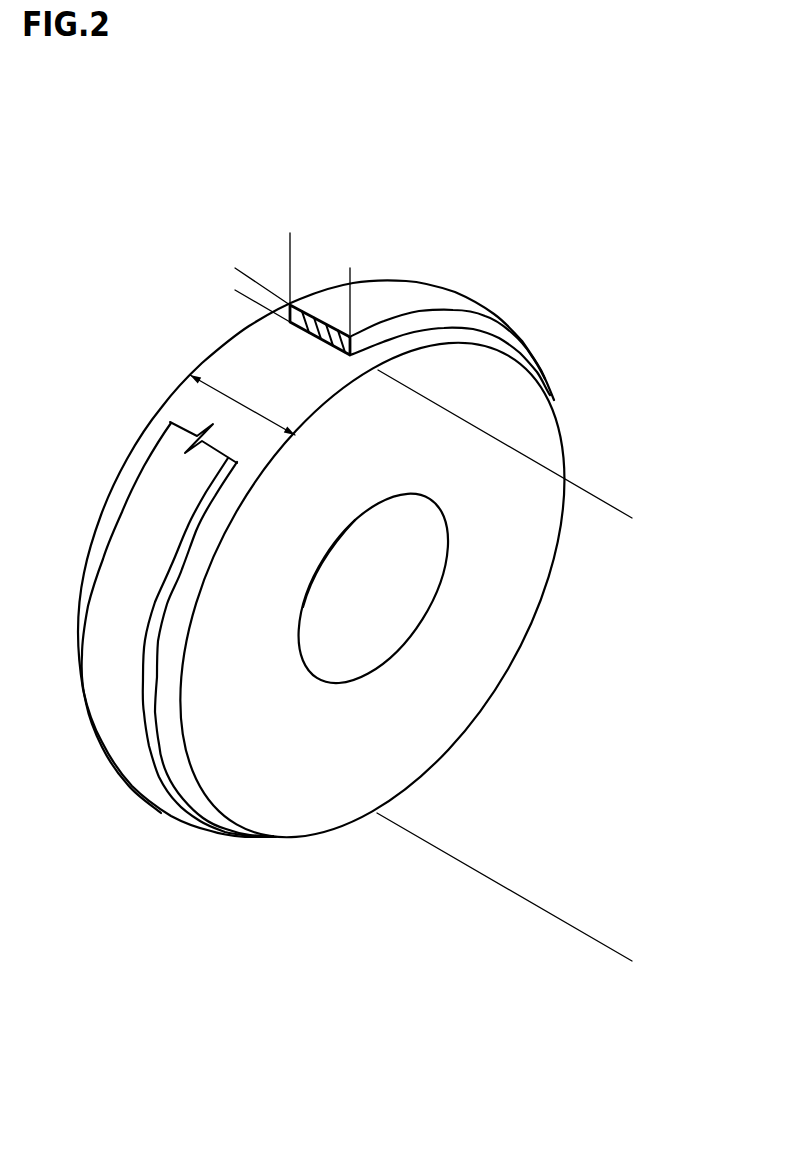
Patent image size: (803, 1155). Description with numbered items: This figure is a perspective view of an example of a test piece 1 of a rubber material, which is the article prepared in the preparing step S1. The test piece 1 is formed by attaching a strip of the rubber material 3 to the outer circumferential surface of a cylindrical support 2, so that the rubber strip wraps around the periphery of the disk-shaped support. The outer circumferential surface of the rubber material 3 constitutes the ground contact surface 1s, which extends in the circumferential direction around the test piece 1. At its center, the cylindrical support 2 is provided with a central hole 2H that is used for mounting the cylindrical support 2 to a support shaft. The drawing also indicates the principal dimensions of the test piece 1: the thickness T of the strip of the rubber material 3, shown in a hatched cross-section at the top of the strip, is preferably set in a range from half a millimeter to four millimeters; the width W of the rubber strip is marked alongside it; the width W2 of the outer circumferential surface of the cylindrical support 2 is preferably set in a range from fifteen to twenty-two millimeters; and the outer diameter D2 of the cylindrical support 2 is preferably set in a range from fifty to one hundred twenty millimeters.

The preparing step S1 is at (379, 550).
The test piece 1 is at (379, 553).
The ground contact surface 1s is at (388, 297).
The cylindrical support 2 is at (372, 590).
The central hole 2H is at (355, 632).
The rubber material 3 is at (359, 520).
The width of ring layer W is at (348, 270).
The width of the outer circumferential surface W2 is at (242, 403).
The thickness of the strip of the rubber material T is at (235, 240).
The outer diameter of the cylindrical support D2 is at (630, 517).